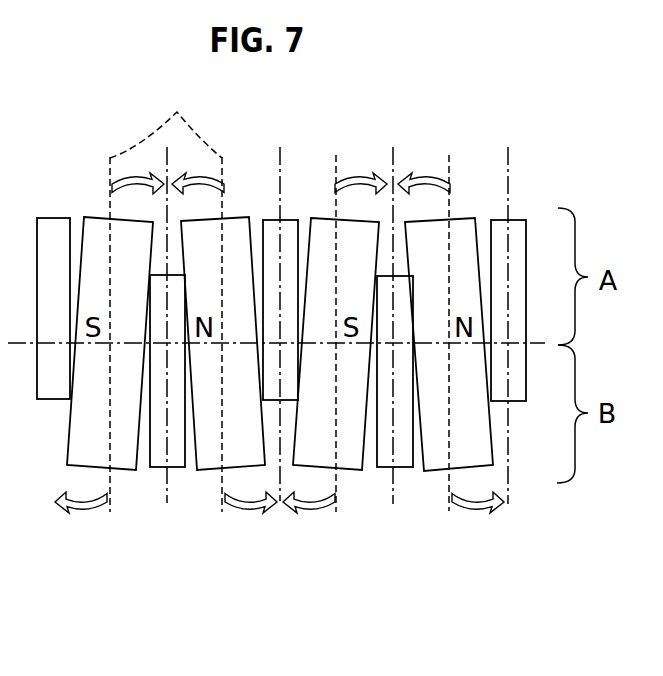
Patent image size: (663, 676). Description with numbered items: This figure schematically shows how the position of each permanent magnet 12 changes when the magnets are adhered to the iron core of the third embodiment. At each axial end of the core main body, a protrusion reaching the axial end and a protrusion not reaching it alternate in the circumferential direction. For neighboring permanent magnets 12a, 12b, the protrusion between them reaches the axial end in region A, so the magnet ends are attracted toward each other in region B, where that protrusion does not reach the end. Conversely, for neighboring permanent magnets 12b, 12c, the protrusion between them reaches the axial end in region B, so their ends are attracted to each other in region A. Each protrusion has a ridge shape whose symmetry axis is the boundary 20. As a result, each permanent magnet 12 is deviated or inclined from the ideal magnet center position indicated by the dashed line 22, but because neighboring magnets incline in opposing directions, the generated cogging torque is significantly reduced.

The permanent magnet 12 is at (280, 431).
The permanent magnet 12a is at (205, 445).
The permanent magnet 12b is at (351, 443).
The permanent magnet 12c is at (442, 403).
The boundary 20 is at (509, 163).
The dashed line 22 is at (166, 298).